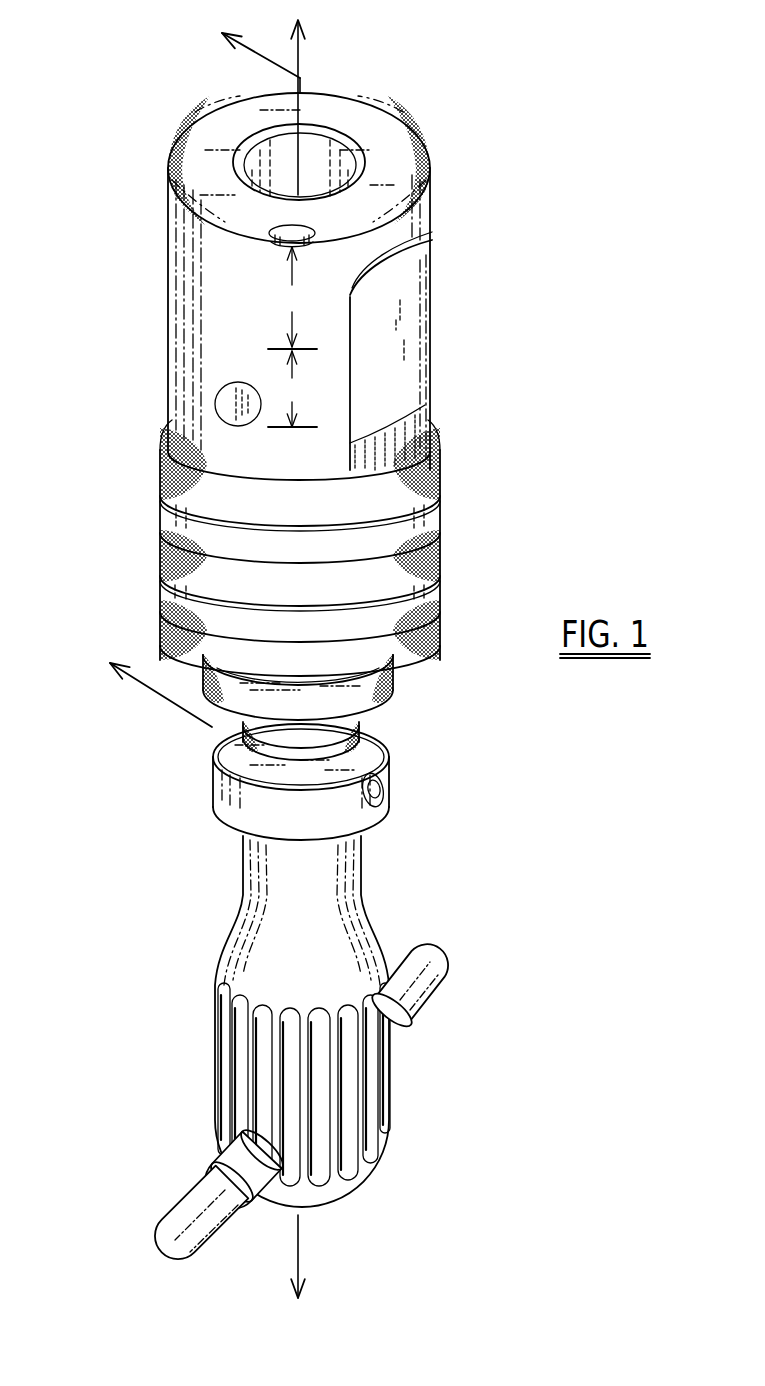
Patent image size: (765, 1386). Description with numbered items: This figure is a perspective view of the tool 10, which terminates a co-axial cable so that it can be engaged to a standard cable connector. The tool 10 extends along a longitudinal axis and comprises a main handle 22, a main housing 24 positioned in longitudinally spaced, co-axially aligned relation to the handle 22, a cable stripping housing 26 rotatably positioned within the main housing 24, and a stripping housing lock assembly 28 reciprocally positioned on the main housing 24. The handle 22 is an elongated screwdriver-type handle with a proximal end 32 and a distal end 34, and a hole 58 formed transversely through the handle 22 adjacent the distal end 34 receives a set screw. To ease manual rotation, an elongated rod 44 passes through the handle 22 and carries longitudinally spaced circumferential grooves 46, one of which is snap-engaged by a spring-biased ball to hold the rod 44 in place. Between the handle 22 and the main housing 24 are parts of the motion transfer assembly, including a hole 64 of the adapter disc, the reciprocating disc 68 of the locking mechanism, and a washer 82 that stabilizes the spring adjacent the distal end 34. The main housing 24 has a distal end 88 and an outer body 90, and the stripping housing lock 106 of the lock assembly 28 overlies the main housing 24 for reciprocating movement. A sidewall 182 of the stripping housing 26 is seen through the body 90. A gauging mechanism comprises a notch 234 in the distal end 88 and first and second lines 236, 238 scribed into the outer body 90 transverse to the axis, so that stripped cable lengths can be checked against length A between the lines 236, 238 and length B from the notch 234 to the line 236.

The tool 10 is at (498, 228).
The main handle 22 is at (258, 950).
The main housing 24 is at (142, 300).
The cable stripping housing 26 is at (438, 338).
The stripping housing lock assembly 28 is at (452, 513).
The proximal end 32 is at (347, 1193).
The distal end 34 is at (243, 762).
The elongated rod 44 is at (418, 967).
The grooves 46 is at (407, 1023).
The hole 58 is at (388, 807).
The hole 64 is at (383, 673).
The disc 68 is at (352, 720).
The washer 82 is at (335, 744).
The distal end 88 is at (380, 130).
The outer body 90 is at (167, 337).
The stripping housing lock 106 is at (215, 565).
The sidewall 182 is at (380, 342).
The notch 234 is at (303, 245).
The first line 236 is at (268, 350).
The second line 238 is at (268, 427).